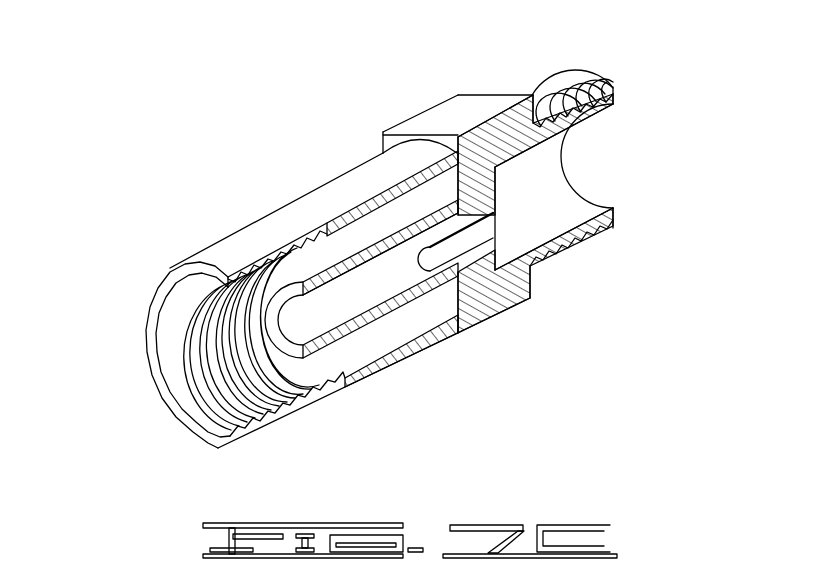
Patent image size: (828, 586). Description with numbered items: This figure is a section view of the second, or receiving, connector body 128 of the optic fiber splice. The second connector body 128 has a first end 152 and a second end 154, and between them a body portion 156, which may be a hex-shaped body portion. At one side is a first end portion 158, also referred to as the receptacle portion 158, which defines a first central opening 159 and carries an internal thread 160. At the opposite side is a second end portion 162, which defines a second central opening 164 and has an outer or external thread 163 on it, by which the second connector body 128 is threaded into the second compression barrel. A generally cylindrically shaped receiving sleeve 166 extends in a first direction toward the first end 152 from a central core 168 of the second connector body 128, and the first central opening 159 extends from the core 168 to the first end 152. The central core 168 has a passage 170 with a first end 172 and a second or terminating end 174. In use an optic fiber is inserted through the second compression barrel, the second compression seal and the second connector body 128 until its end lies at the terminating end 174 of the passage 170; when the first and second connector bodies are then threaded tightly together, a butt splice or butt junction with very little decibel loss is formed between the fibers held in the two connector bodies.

The second connector body 128 is at (457, 102).
The first end 152 is at (149, 334).
The second end 154 is at (613, 90).
The body portion 156 is at (390, 123).
The first end portion 158 is at (213, 255).
The first central opening 159 is at (325, 222).
The internal thread 160 is at (222, 426).
The second end portion 162 is at (562, 90).
The external thread 163 is at (594, 95).
The second central opening 164 is at (582, 204).
The receiving sleeve 166 is at (378, 312).
The central core 168 is at (468, 246).
The passage 170 is at (463, 220).
The first end of passage 172 is at (497, 214).
The terminating end 174 is at (396, 226).